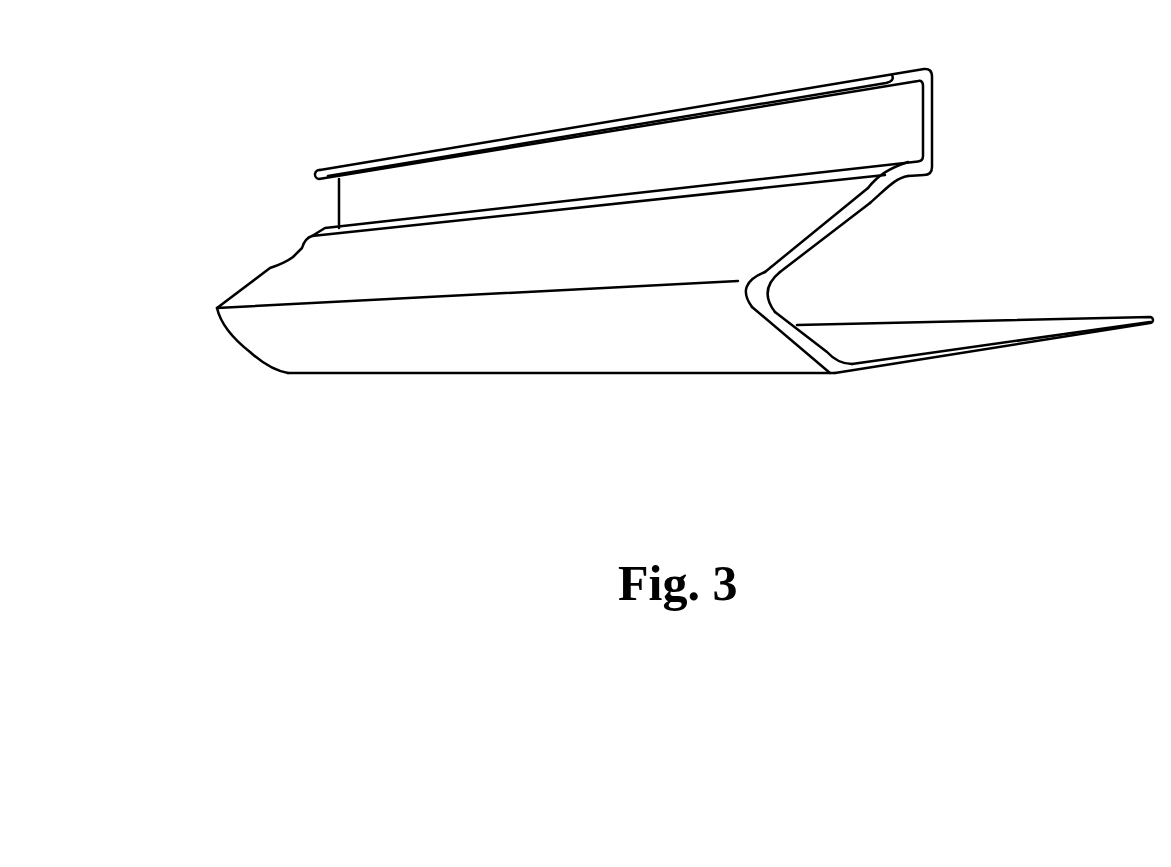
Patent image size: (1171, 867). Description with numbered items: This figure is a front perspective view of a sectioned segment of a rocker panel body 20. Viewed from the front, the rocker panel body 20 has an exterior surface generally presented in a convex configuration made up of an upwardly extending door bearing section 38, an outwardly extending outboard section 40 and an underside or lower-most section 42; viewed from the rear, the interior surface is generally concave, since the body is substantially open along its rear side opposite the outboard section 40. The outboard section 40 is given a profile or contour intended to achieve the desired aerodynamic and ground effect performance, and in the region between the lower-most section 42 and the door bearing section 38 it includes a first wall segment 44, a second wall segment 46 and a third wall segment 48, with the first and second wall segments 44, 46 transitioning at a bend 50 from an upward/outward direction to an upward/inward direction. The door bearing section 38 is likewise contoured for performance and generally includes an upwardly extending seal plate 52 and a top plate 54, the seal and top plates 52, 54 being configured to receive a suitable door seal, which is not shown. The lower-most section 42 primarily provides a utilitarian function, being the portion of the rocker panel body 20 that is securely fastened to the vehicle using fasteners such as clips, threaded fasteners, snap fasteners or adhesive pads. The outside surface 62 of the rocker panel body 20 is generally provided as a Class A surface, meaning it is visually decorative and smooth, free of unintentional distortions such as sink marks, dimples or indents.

The rocker panel body 20 is at (290, 277).
The door bearing section 38 is at (350, 205).
The outboard section 40 is at (233, 318).
The lower-most section 42 is at (925, 360).
The first wall segment 44 is at (779, 326).
The second wall segment 46 is at (828, 228).
The third wall segment 48 is at (887, 175).
The bend 50 is at (773, 260).
The seal plate 52 is at (928, 122).
The top plate 54 is at (899, 81).
The outside surface 62 is at (472, 288).